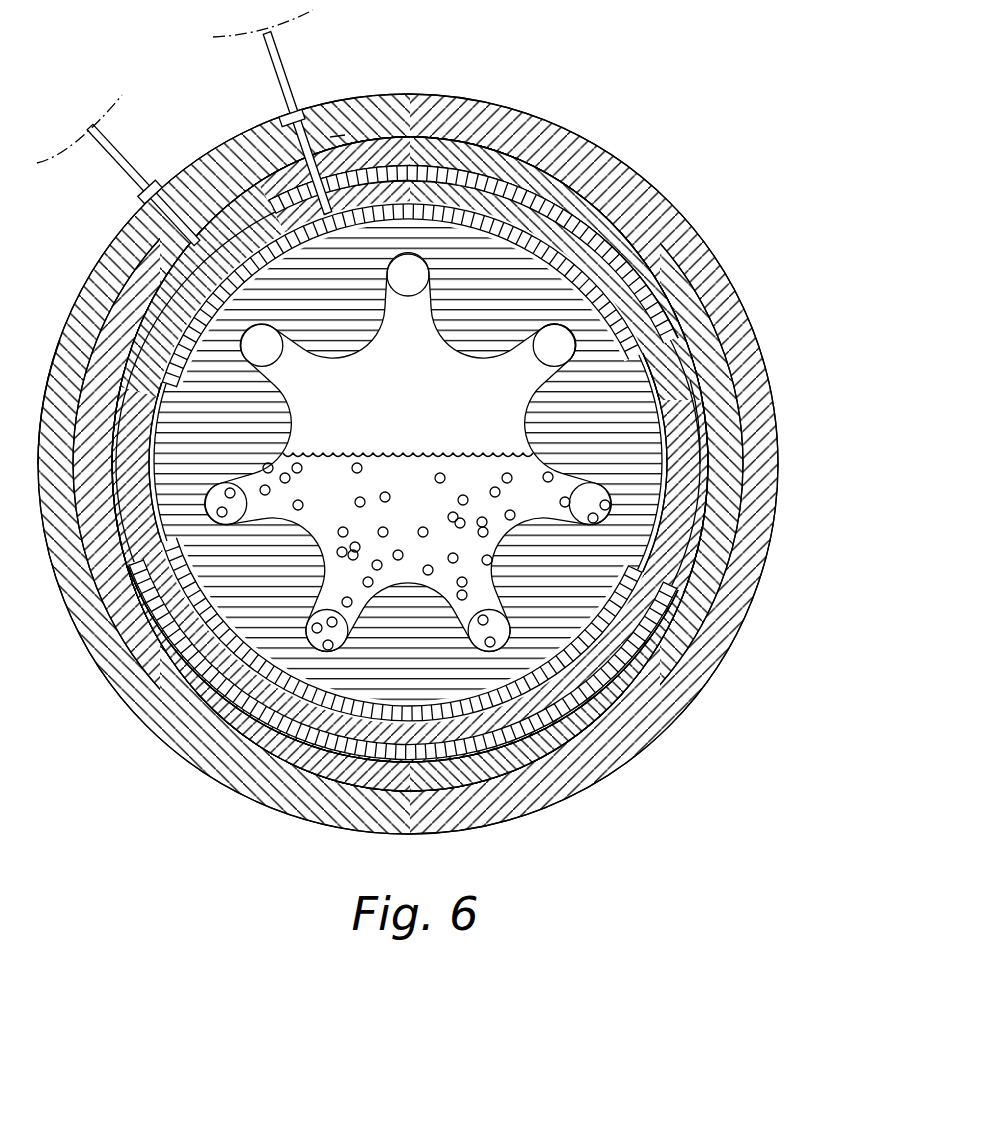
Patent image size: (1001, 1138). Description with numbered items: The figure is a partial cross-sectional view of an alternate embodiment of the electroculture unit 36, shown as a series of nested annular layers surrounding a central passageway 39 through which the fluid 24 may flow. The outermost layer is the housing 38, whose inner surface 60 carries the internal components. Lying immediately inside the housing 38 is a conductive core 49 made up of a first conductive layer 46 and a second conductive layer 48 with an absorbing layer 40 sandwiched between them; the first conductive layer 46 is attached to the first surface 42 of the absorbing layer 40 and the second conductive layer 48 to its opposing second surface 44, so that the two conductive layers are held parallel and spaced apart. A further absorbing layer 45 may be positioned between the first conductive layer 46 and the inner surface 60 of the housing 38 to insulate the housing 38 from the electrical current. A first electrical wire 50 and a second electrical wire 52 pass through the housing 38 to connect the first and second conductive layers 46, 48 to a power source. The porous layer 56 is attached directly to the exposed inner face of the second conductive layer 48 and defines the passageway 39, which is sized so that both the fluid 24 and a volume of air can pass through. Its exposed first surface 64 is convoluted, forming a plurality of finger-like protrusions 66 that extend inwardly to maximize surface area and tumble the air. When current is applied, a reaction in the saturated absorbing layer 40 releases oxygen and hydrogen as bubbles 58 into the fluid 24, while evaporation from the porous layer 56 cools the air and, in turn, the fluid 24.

The fluid 24 is at (463, 475).
The electroculture unit 36 is at (596, 88).
The housing 38 is at (443, 88).
The passageway 39 is at (513, 363).
The absorbing layer 40 is at (680, 390).
The first surface 42 is at (573, 203).
The second surface 44 is at (436, 301).
The further absorbing layer 45 is at (103, 358).
The first conductive layer 46 is at (253, 205).
The second conductive layer 48 is at (392, 190).
The conductive core 49 is at (334, 136).
The first electrical wire 50 is at (113, 157).
The second electrical wire 52 is at (273, 72).
The porous layer 56 is at (642, 507).
The bubbles 58 is at (270, 491).
The inner surface 60 is at (498, 163).
The first surface 64 is at (288, 436).
The finger-like protrusions 66 is at (274, 352).